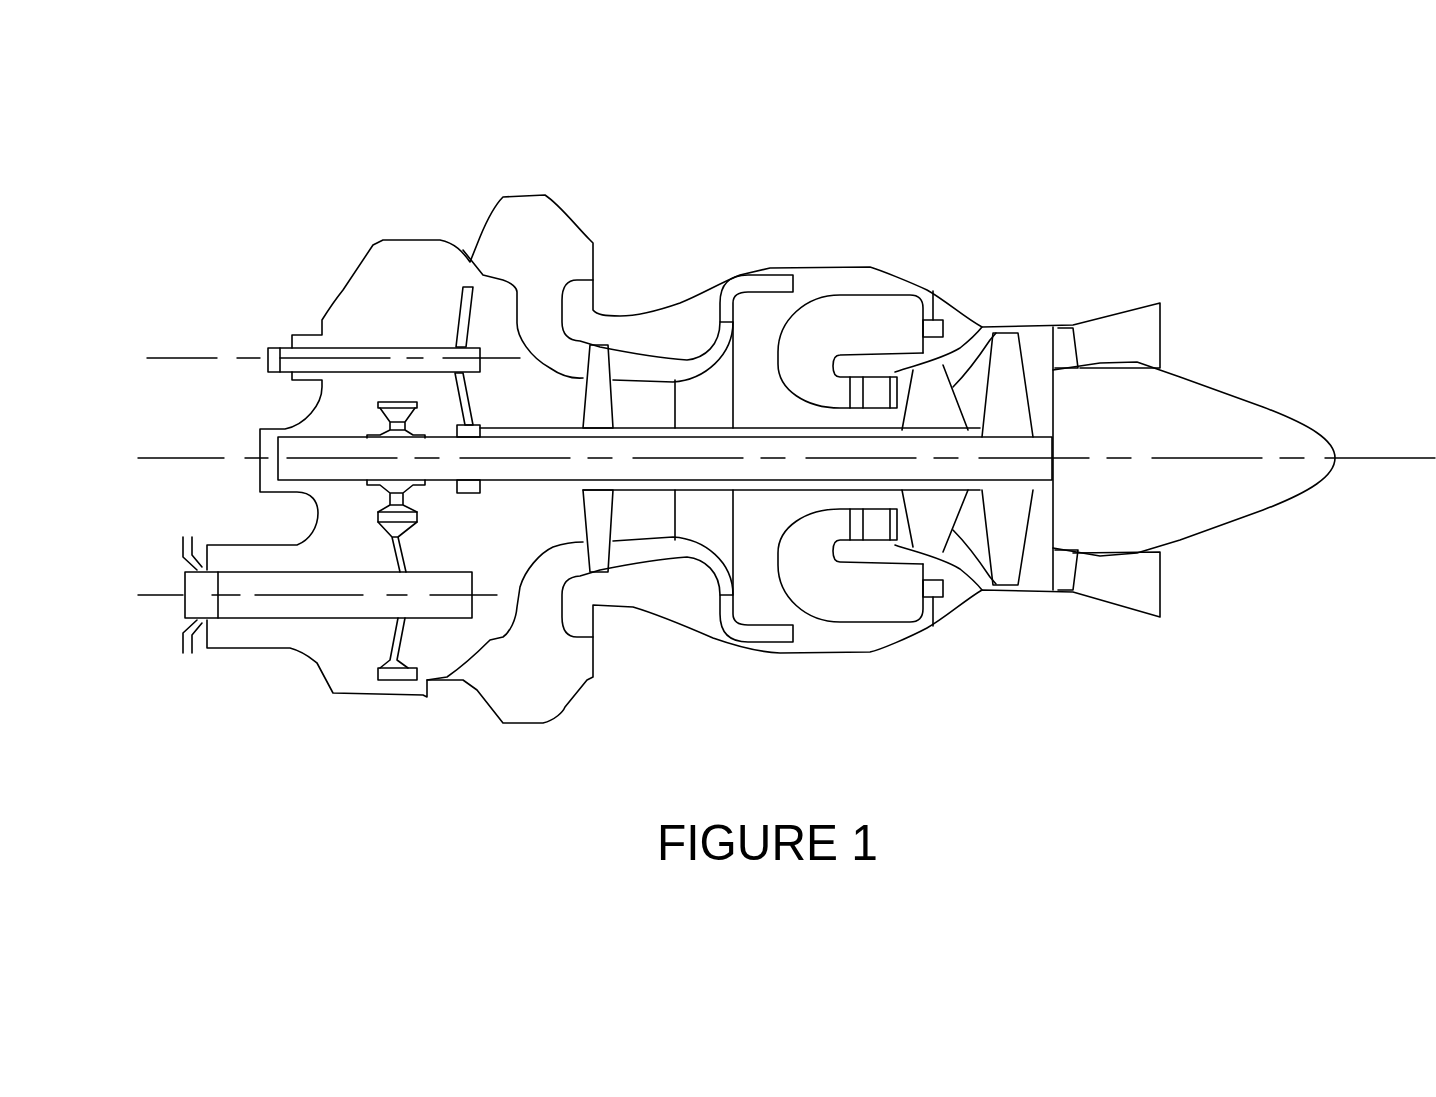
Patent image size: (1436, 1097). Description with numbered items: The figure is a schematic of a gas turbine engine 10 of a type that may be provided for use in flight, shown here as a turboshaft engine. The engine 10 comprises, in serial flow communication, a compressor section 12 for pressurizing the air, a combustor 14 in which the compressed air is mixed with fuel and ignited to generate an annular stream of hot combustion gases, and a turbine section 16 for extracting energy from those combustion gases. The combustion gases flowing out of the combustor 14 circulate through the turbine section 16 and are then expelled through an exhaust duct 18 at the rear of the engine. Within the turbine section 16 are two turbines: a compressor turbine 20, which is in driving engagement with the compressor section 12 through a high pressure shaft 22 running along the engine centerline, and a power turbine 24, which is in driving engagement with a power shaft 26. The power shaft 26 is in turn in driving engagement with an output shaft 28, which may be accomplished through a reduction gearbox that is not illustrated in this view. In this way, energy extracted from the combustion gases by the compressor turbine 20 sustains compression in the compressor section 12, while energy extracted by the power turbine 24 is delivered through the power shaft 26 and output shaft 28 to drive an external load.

The gas turbine engine 10 is at (1140, 201).
The compressor section 12 is at (702, 387).
The combustor 14 is at (857, 327).
The turbine section 16 is at (962, 550).
The exhaust duct 18 is at (1042, 347).
The compressor turbine 20 is at (925, 515).
The high pressure shaft 22 is at (782, 428).
The power turbine 24 is at (1007, 357).
The power shaft 26 is at (520, 480).
The output shaft 28 is at (253, 607).